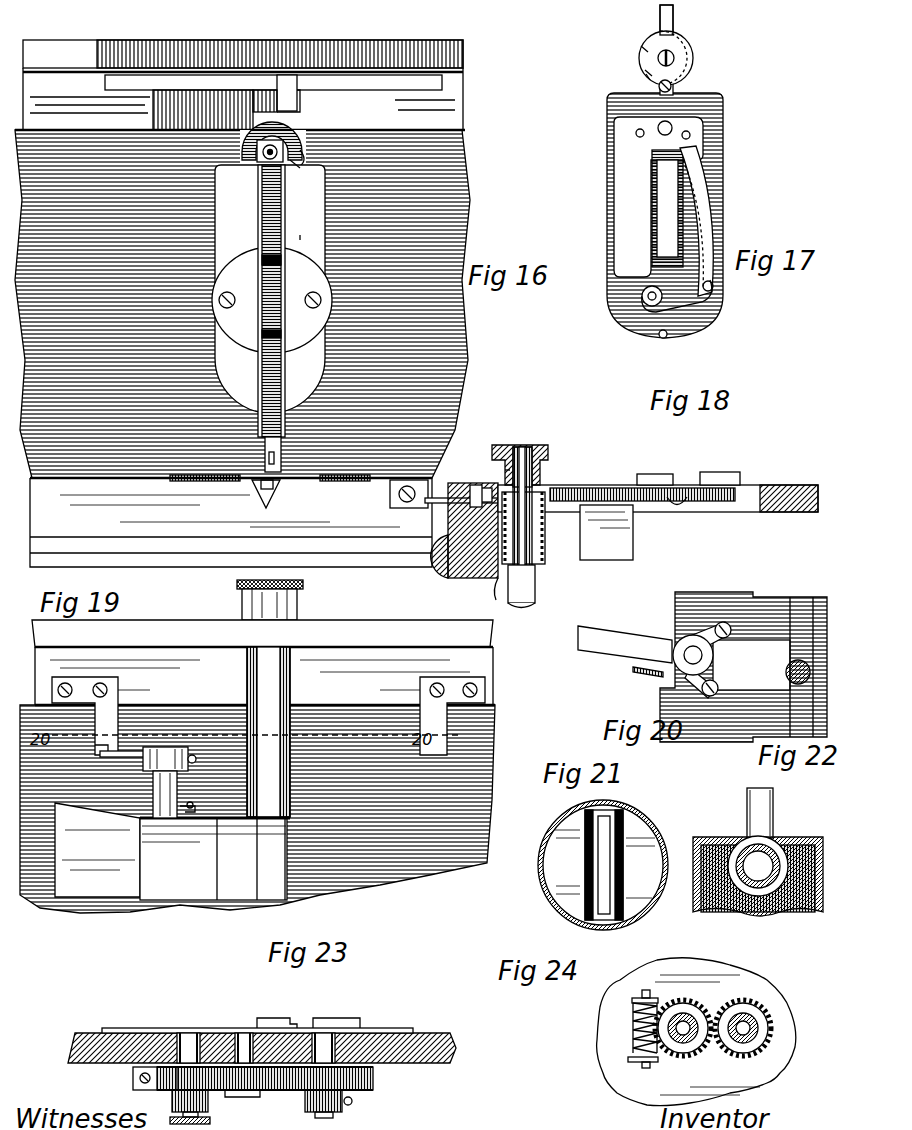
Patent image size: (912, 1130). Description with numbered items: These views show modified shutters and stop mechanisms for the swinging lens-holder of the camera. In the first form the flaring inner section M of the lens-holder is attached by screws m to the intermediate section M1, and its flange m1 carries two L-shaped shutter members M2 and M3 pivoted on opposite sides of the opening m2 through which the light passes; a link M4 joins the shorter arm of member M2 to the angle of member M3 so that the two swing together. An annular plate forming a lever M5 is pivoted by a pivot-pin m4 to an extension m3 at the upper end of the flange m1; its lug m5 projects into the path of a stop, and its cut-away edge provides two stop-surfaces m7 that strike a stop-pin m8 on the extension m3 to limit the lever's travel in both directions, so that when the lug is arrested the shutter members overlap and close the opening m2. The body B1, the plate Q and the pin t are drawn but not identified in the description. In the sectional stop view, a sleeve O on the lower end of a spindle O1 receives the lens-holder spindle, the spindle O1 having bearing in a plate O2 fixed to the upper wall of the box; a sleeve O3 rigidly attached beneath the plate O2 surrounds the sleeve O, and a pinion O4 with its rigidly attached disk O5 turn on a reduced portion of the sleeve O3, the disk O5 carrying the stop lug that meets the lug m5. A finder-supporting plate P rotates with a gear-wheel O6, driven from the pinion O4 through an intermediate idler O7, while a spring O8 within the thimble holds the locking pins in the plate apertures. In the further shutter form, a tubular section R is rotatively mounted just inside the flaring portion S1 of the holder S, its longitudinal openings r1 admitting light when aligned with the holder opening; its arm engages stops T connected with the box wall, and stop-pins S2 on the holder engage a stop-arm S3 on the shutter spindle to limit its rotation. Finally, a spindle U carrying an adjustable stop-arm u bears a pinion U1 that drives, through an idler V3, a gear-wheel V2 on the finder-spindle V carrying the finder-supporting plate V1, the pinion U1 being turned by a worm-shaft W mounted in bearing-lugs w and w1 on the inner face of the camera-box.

In FIG. 16, the bed or body B1 is at (242, 304).
In FIG. 19, the bed or body B1 is at (257, 809).
In FIG. 16, the plate Q is at (287, 82).
In FIG. 16, the lug m5 is at (282, 122).
In FIG. 17, the lug m5 is at (660, 24).
In FIG. 16, the pivot-pin m4 is at (266, 147).
In FIG. 17, the pivot-pin m4 is at (673, 56).
In FIG. 16, the lever M5 is at (295, 134).
In FIG. 17, the lever M5 is at (694, 60).
In FIG. 16, the stop-surfaces m7 is at (304, 158).
In FIG. 17, the stop-surfaces m7 is at (644, 46).
In FIG. 16, the intermediate section M1 is at (270, 289).
In FIG. 16, the opening m2 is at (262, 280).
In FIG. 17, the opening m2 is at (666, 226).
In FIG. 16, the screws m is at (226, 310).
In FIG. 16, the flange m1 is at (308, 242).
In FIG. 17, the flange m1 is at (712, 99).
In FIG. 16, the inner section M is at (285, 222).
In FIG. 16, the extension m3 is at (292, 162).
In FIG. 17, the extension m3 is at (648, 70).
In FIG. 16, the pin t is at (283, 462).
In FIG. 18, the pin t is at (536, 592).
In FIG. 19, the pin t is at (283, 732).
In FIG. 17, the shutter member M2 is at (628, 179).
In FIG. 17, the shutter member M3 is at (688, 208).
In FIG. 17, the link M4 is at (704, 236).
In FIG. 17, the stop-pin m8 is at (646, 76).
In FIG. 18, the sleeve O is at (540, 527).
In FIG. 18, the spindle O1 is at (528, 452).
In FIG. 18, the plate O2 is at (471, 485).
In FIG. 18, the sleeve O3 is at (560, 470).
In FIG. 18, the pinion O4 is at (517, 455).
In FIG. 18, the disk O5 is at (436, 496).
In FIG. 18, the gear-wheel O6 is at (770, 494).
In FIG. 18, the intermediate pinion O7 is at (592, 487).
In FIG. 18, the spring O8 is at (508, 450).
In FIG. 18, the finder-supporting plate P is at (718, 476).
In FIG. 19, the stops T is at (268, 716).
In FIG. 20, the stops T is at (636, 670).
In FIG. 19, the holder S is at (200, 859).
In FIG. 20, the holder S is at (648, 702).
In FIG. 19, the flaring portion S1 is at (158, 748).
In FIG. 20, the flaring portion S1 is at (622, 640).
In FIG. 22, the flaring portion S1 is at (750, 802).
In FIG. 19, the stop-pins S2 is at (192, 818).
In FIG. 20, the stop-pins S2 is at (742, 612).
In FIG. 19, the stop-arm S3 is at (170, 822).
In FIG. 20, the stop-arm S3 is at (730, 636).
In FIG. 21, the tubular section R is at (590, 872).
In FIG. 22, the tubular section R is at (750, 885).
In FIG. 21, the longitudinal openings r1 is at (600, 890).
In FIG. 22, the longitudinal openings r1 is at (774, 844).
In FIG. 23, the spindle U is at (190, 1045).
In FIG. 24, the spindle U is at (688, 1042).
In FIG. 23, the pinion U1 is at (172, 1078).
In FIG. 24, the pinion U1 is at (690, 1010).
In FIG. 23, the finder-spindle V is at (340, 1040).
In FIG. 23, the finder-supporting plate V1 is at (336, 1018).
In FIG. 23, the gear-wheel V2 is at (373, 1078).
In FIG. 24, the gear-wheel V2 is at (775, 1010).
In FIG. 23, the intermediate pinion V3 is at (240, 1075).
In FIG. 24, the intermediate pinion V3 is at (735, 1045).
In FIG. 24, the worm-shaft W is at (633, 1020).
In FIG. 23, the bearing-lugs w is at (133, 1080).
In FIG. 24, the bearing-lugs w is at (640, 994).
In FIG. 24, the bearing-lug w1 is at (634, 1062).
In FIG. 23, the adjustable stop-arm u is at (211, 1121).